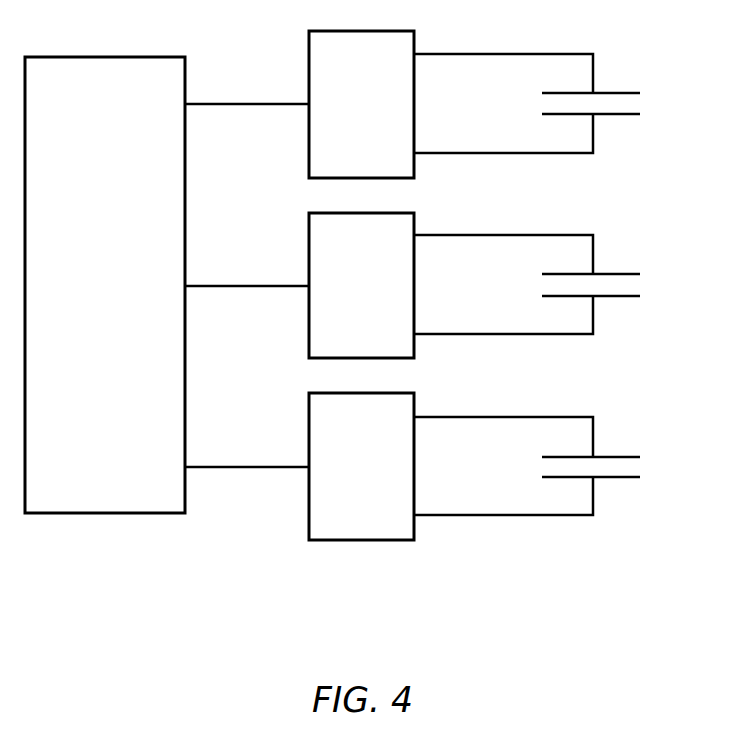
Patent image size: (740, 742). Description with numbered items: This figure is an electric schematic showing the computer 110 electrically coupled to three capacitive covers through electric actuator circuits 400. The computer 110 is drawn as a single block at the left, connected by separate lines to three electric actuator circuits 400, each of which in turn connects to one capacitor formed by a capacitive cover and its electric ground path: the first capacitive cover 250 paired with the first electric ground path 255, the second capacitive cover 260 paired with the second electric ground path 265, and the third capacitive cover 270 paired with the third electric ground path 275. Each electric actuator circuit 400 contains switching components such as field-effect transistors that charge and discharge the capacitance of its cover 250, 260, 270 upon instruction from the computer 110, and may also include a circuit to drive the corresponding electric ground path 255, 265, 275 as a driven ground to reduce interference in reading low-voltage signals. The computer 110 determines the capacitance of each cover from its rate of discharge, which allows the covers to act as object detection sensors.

The computer 110 is at (97, 297).
The electric actuator circuit 400 is at (352, 116).
The first capacitive cover 250 is at (627, 92).
The first electric ground path 255 is at (627, 115).
The second capacitive cover 260 is at (627, 273).
The second electric ground path 265 is at (627, 297).
The third capacitive cover 270 is at (627, 456).
The third electric ground path 275 is at (627, 478).